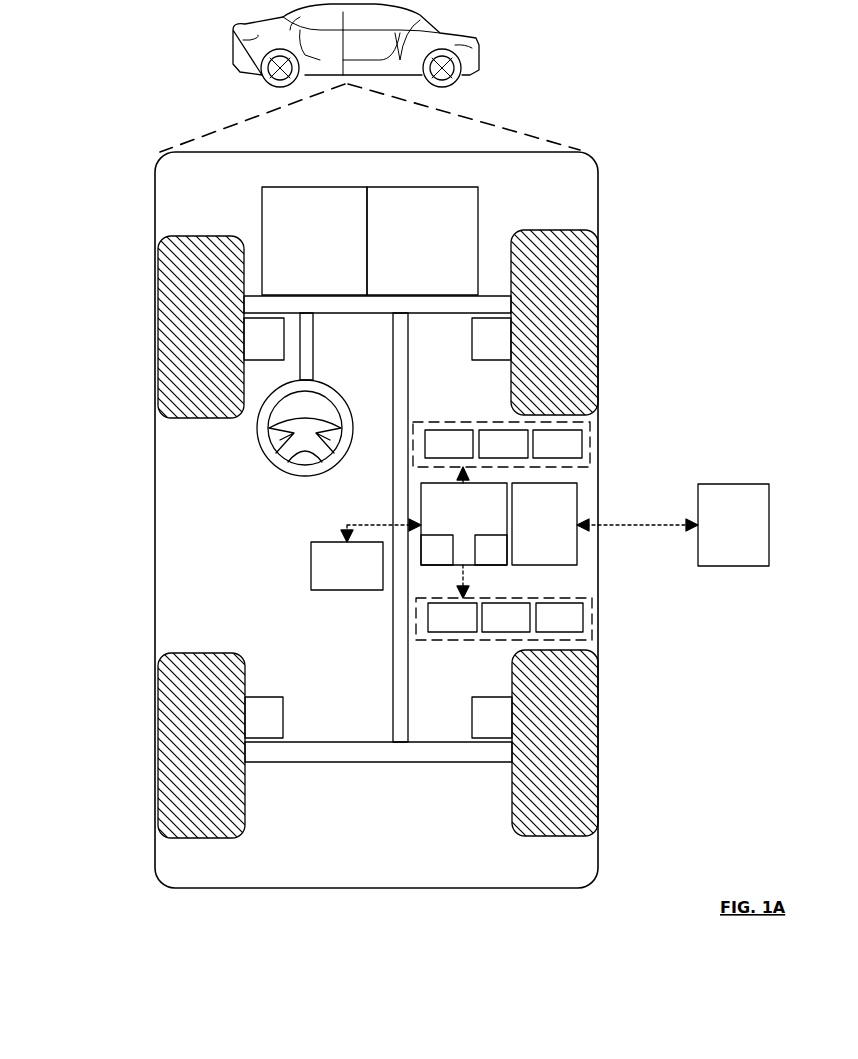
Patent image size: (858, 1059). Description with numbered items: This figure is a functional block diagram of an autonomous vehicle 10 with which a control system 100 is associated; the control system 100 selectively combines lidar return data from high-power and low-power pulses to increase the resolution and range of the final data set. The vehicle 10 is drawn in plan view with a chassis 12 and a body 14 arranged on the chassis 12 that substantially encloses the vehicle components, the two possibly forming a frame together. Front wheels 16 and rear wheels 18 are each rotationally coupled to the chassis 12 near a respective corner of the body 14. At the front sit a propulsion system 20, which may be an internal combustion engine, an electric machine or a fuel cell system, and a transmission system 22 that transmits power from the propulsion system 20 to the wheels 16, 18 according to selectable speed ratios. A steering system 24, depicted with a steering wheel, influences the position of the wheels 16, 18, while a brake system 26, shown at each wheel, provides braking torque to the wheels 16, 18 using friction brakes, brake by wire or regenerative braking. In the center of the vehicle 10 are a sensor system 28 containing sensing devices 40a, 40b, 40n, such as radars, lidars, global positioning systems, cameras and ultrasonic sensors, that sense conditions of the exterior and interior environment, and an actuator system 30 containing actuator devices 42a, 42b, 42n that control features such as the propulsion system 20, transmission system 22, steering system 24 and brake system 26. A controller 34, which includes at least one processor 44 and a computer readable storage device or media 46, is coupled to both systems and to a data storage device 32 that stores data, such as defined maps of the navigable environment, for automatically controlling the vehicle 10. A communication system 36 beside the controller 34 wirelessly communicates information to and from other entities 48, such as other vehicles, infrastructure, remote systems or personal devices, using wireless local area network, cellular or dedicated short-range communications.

The control system 100 is at (432, 499).
The vehicle 10 is at (233, 58).
The chassis 12 is at (393, 682).
The body 14 is at (155, 500).
The front wheels 16 is at (200, 236).
The rear wheels 18 is at (218, 838).
The propulsion system 20 is at (314, 241).
The transmission system 22 is at (422, 241).
The steering system 24 is at (332, 331).
The brake system 26 is at (378, 528).
The sensor system 28 is at (501, 421).
The actuator system 30 is at (504, 640).
The data storage device 32 is at (347, 566).
The controller 34 is at (464, 524).
The communication system 36 is at (544, 524).
The sensing device 40a is at (449, 444).
The sensing device 40b is at (503, 444).
The sensing device 40n is at (557, 444).
The actuator device 42a is at (452, 617).
The actuator device 42b is at (506, 617).
The actuator device 42n is at (559, 617).
The processor 44 is at (437, 550).
The computer readable storage device or media 46 is at (491, 550).
The other entities 48 is at (733, 525).